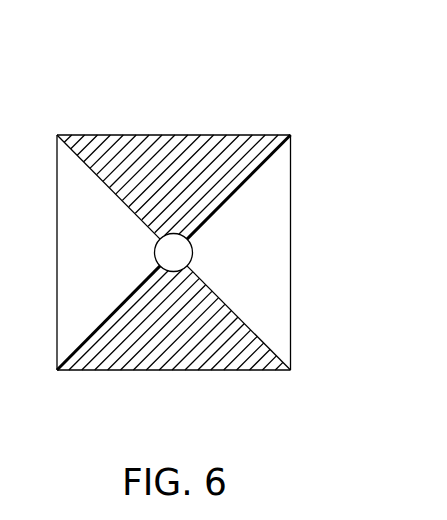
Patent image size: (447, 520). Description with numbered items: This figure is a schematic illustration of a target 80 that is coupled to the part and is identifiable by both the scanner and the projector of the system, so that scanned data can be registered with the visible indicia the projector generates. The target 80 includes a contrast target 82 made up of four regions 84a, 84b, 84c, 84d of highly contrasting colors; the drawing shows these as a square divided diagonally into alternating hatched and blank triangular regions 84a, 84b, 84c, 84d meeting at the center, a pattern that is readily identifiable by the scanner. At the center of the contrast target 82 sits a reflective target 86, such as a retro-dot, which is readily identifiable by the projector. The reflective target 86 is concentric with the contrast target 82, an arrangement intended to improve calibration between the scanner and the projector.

The target 80 is at (268, 97).
The contrast target 82 is at (123, 148).
The region 84a is at (180, 150).
The region 84b is at (263, 272).
The region 84c is at (185, 346).
The region 84d is at (83, 274).
The reflective target 86 is at (187, 249).